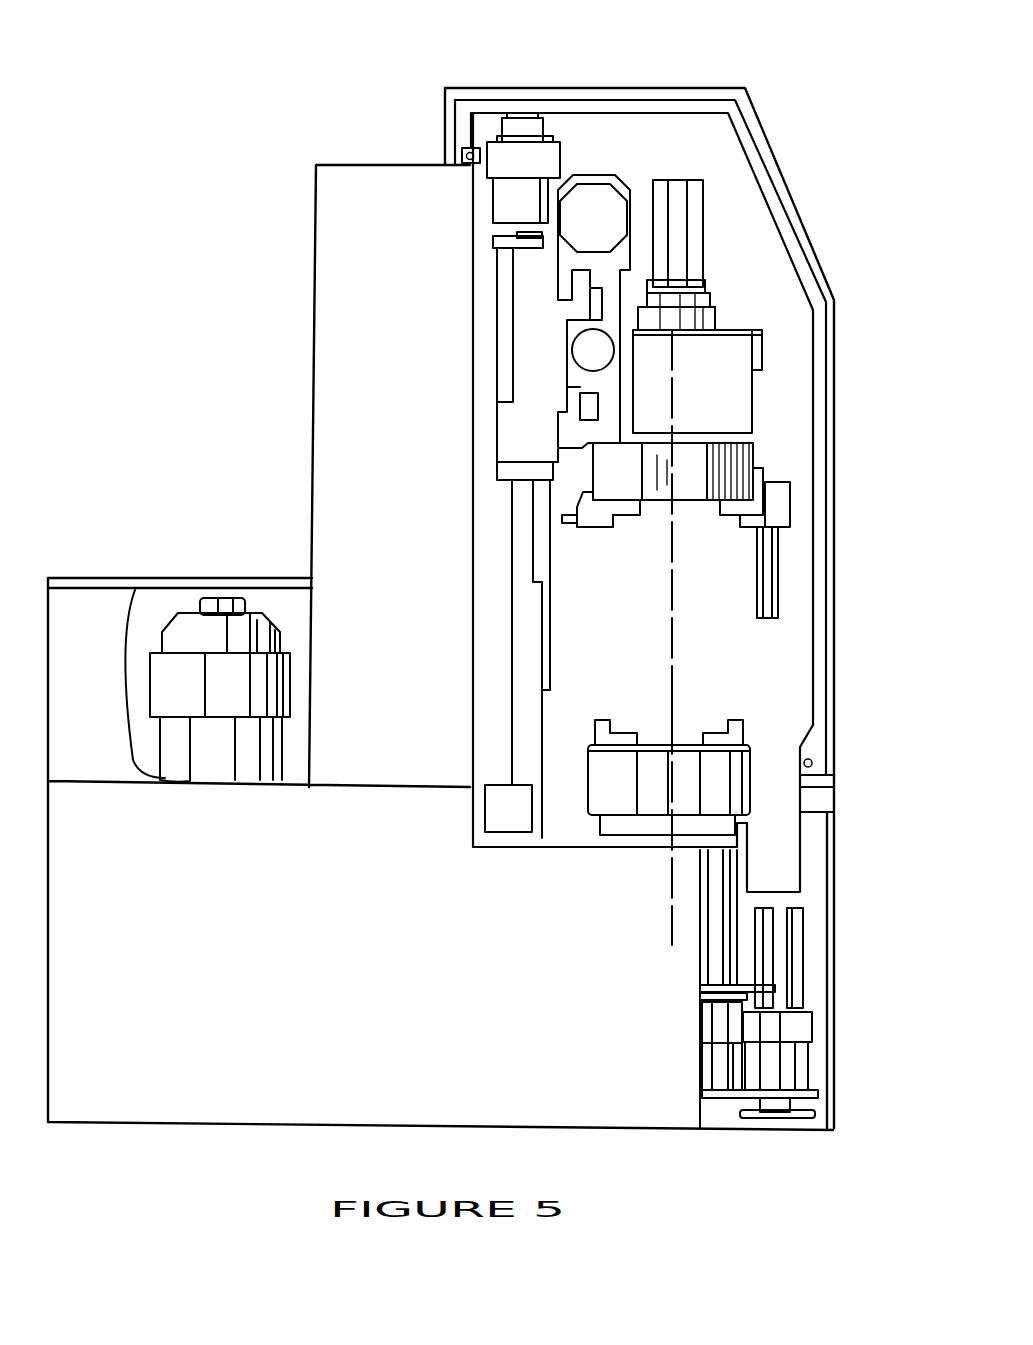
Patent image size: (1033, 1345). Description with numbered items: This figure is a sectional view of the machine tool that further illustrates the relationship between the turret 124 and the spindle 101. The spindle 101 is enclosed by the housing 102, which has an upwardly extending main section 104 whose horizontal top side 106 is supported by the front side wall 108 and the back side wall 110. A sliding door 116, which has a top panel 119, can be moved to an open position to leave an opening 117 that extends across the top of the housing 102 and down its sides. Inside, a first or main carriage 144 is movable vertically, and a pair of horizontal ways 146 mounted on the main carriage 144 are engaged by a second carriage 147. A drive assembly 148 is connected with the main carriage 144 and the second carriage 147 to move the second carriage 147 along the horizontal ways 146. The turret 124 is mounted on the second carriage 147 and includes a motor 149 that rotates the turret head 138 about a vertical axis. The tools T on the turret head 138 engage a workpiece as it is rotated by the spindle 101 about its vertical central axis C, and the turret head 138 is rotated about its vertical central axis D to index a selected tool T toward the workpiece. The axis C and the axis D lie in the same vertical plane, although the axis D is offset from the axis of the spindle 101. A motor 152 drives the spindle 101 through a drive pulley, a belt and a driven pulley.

The spindle 101 is at (620, 795).
The housing 102 is at (782, 122).
The main section 104 is at (796, 176).
The top side 106 is at (611, 87).
The front side wall 108 is at (836, 548).
The back side wall 110 is at (452, 104).
The sliding door 116 is at (805, 240).
The opening 117 is at (466, 130).
The top panel 119 is at (696, 58).
The turret 124 is at (774, 440).
The turret head 138 is at (750, 472).
The main carriage 144 is at (530, 362).
The horizontal ways 146 is at (594, 312).
The second carriage 147 is at (610, 372).
The drive assembly 148 is at (598, 212).
The motor 149 is at (700, 243).
The motor 152 is at (212, 640).
The tools T is at (596, 530).
The vertical central axis of turret head D is at (672, 545).
The vertical central axis of spindle C is at (668, 717).